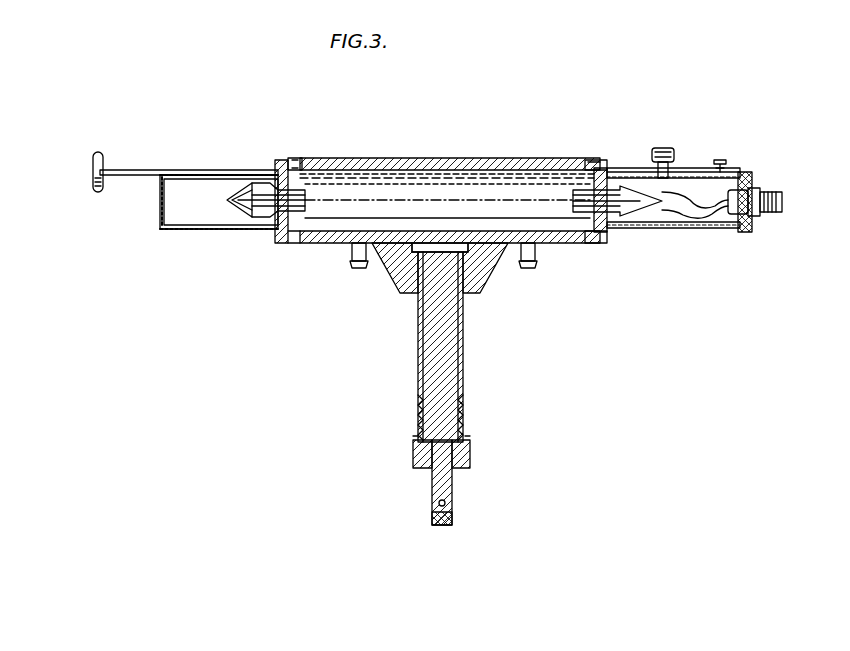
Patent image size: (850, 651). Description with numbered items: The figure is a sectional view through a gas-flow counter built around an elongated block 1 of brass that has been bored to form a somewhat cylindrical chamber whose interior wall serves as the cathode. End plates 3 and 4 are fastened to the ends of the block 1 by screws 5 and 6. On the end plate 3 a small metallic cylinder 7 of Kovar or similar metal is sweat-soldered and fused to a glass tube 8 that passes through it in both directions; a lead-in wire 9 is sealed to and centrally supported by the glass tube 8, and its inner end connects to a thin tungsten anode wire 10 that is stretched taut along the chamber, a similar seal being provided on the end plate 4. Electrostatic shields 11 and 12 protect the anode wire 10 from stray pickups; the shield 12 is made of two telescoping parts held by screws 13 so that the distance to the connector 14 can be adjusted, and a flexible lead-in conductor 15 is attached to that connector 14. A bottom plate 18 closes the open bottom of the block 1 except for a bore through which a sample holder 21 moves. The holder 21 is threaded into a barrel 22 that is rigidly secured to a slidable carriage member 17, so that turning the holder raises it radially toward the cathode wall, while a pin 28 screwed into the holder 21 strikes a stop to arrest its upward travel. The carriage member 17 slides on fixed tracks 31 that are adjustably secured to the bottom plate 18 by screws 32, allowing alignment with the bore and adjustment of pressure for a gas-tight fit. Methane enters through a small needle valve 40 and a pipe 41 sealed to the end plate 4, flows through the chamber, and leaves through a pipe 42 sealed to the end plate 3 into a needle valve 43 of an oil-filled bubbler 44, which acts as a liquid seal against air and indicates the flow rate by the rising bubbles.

The block 1 is at (450, 158).
The end plate 3 is at (310, 158).
The end plate 4 is at (604, 240).
The screws 5 is at (280, 162).
The screws 6 is at (604, 165).
The metallic cylinder 7 is at (270, 216).
The glass tube 8 is at (228, 203).
The lead-in wire 9 is at (250, 214).
The anode wire 10 is at (345, 196).
The electrostatic shield 11 is at (232, 177).
The electrostatic shield 12 is at (745, 172).
The screws 13 is at (668, 152).
The connector 14 is at (780, 195).
The flexible lead-in conductor 15 is at (718, 222).
The carriage member 17 is at (402, 272).
The bottom plate 18 is at (310, 243).
The sample holder 21 is at (437, 343).
The barrel 22 is at (420, 415).
The pin 28 is at (448, 503).
The tracks 31 is at (378, 265).
The screws 32 is at (355, 262).
The needle valve 40 is at (726, 164).
The pipe 41 is at (688, 172).
The pipe 42 is at (240, 170).
The needle valve 43 is at (104, 178).
The bubbler 44 is at (92, 169).